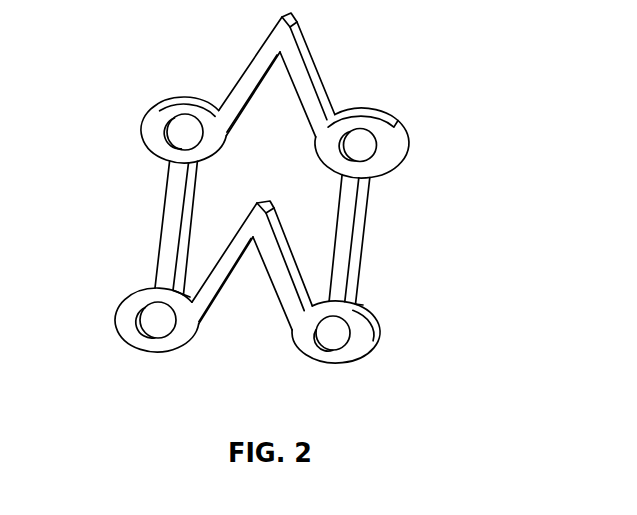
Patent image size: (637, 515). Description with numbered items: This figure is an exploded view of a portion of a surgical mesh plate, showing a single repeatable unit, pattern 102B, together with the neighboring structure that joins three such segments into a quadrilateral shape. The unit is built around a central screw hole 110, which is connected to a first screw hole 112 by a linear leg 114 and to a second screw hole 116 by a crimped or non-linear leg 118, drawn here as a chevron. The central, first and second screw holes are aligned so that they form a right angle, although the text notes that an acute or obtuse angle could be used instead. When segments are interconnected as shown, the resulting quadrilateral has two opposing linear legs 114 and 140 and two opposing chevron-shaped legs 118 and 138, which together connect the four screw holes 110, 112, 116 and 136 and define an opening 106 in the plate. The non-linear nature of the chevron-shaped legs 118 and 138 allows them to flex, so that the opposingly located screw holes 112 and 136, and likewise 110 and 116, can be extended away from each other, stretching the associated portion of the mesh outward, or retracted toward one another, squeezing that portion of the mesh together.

The pattern 102B is at (135, 229).
The opening 106 is at (377, 246).
The central screw hole 110 is at (150, 320).
The first screw hole 112 is at (183, 132).
The linear leg 114 is at (180, 265).
The second screw hole 116 is at (335, 335).
The crimped leg 118 is at (217, 300).
The screw hole 136 is at (360, 145).
The chevron-shaped leg 138 is at (315, 72).
The linear leg 140 is at (359, 270).